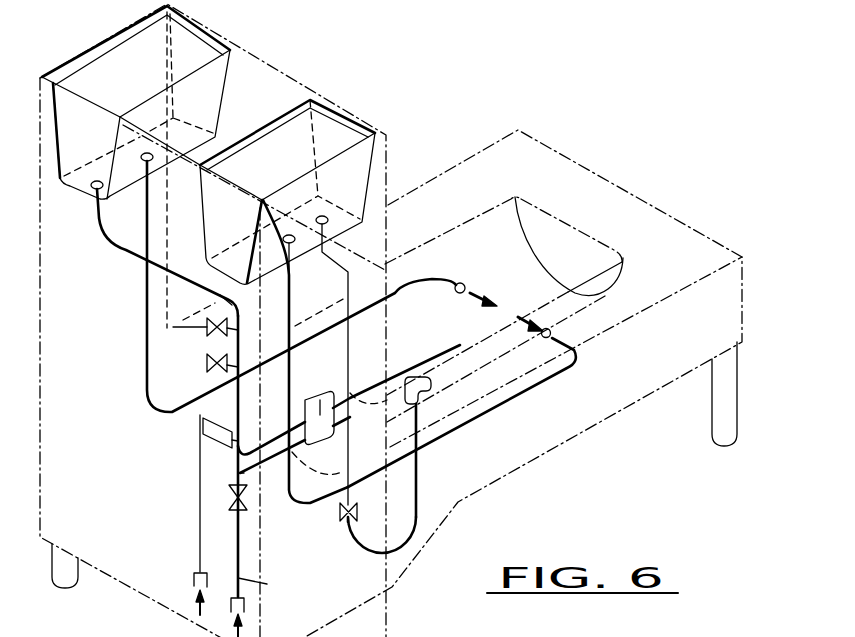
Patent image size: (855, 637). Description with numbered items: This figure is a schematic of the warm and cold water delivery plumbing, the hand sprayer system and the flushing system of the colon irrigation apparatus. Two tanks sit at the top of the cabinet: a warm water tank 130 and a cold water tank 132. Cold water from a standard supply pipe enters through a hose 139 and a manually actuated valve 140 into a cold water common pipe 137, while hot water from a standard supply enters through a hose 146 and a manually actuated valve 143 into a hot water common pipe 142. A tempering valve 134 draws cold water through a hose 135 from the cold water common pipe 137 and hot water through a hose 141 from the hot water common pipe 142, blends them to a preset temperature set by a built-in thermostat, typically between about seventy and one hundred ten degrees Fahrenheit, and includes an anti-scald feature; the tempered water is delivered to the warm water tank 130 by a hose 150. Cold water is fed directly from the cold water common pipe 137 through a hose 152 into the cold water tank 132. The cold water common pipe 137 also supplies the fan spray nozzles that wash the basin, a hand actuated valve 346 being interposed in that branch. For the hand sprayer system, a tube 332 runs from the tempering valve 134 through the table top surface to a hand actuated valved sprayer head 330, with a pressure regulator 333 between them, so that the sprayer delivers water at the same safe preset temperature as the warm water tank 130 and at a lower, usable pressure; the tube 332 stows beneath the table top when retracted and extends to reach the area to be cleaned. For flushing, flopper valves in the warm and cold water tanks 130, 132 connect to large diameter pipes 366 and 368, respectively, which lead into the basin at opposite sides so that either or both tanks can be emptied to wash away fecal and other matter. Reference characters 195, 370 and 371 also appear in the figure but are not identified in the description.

The warm water tank 130 is at (323, 125).
The cold water tank 132 is at (187, 41).
The tempering valve 134 is at (321, 392).
The hose 135 is at (238, 456).
The cold water common pipe 137 is at (237, 351).
The hose 139 is at (199, 547).
The manually actuated valve 140 is at (202, 429).
The hose 141 is at (338, 520).
The hot water common pipe 142 is at (240, 473).
The manually actuated valve 143 is at (226, 505).
The hose 146 is at (286, 589).
The hose 150 is at (388, 203).
The hose 152 is at (132, 247).
The valve 195 is at (207, 366).
The hand actuated valved sprayer head 330 is at (422, 377).
The tube 332 is at (418, 457).
The pressure regulator 333 is at (352, 513).
The hand actuated valve 346 is at (207, 325).
The large diameter pipe 366 is at (263, 200).
The large diameter pipe 368 is at (145, 303).
The nozzle 370 is at (462, 283).
The nozzle 371 is at (550, 336).